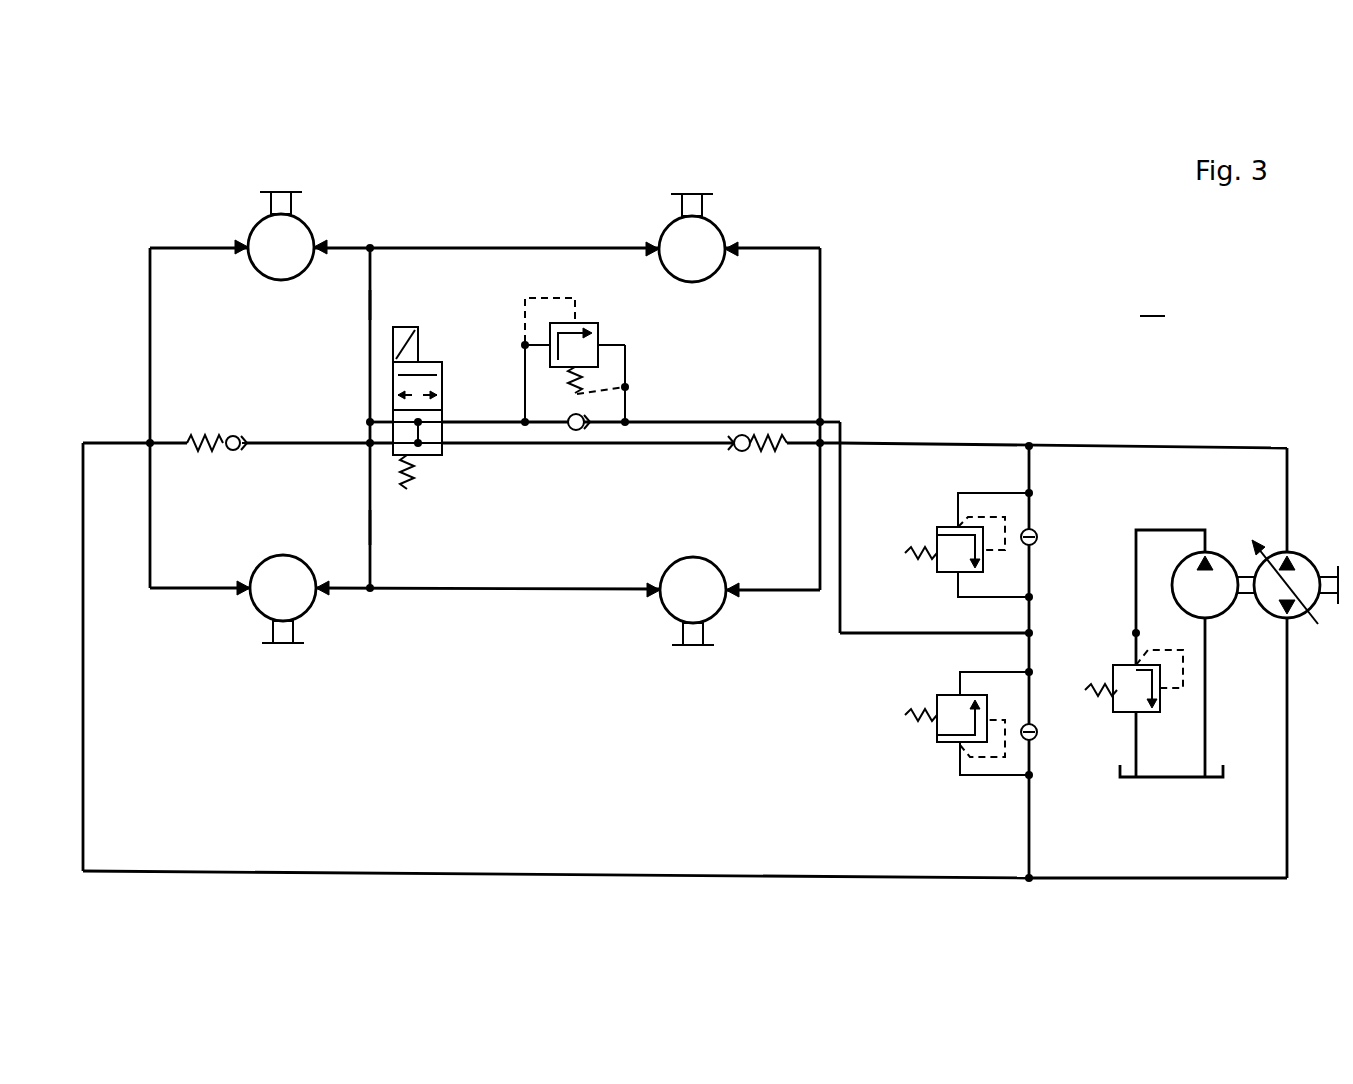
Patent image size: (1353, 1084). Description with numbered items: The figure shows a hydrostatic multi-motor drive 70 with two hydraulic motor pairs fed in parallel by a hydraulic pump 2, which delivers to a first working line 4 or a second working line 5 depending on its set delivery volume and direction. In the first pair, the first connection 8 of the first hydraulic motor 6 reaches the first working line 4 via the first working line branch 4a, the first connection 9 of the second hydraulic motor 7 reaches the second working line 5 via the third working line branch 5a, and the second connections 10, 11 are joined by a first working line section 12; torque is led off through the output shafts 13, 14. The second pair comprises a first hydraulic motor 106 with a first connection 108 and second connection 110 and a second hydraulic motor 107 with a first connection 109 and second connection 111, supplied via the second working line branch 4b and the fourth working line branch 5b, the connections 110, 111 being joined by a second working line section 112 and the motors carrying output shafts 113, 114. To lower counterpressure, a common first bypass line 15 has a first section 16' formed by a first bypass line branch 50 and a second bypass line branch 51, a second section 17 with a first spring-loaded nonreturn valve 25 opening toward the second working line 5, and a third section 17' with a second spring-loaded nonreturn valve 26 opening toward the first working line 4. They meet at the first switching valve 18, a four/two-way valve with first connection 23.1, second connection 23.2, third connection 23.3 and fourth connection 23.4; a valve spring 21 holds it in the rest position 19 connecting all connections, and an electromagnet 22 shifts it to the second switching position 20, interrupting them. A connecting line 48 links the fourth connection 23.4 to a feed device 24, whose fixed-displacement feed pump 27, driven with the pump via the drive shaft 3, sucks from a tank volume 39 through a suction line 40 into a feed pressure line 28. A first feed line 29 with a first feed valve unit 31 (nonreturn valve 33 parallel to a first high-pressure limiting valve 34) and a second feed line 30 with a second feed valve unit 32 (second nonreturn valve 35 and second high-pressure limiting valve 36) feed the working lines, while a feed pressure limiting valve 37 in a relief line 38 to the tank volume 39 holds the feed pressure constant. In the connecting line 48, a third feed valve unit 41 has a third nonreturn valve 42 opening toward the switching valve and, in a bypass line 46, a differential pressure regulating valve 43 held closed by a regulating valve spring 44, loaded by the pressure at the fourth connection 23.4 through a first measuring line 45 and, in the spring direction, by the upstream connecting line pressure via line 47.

The hydraulic pump 2 is at (1296, 566).
The drive shaft 3 is at (1339, 598).
The first working line 4 is at (973, 447).
The first working line branch 4a is at (806, 593).
The second working line branch 4b is at (806, 246).
The second working line 5 is at (690, 875).
The third working line branch 5a is at (149, 523).
The fourth working line branch 5b is at (149, 333).
The first hydraulic motor 6 is at (688, 626).
The second hydraulic motor 7 is at (287, 625).
The first connection 8 is at (726, 592).
The first connection 9 is at (250, 590).
The second connection 10 is at (660, 592).
The second connection 11 is at (316, 590).
The first working line section 12 is at (478, 590).
The output shaft 13 is at (695, 647).
The output shaft 14 is at (286, 645).
The first bypass line 15 is at (305, 392).
The first section 16' is at (490, 389).
The second section 17 is at (135, 623).
The third section 17' is at (597, 463).
The first switching valve 18 is at (440, 283).
The rest position 19 is at (430, 438).
The second switching position 20 is at (393, 383).
The valve spring 21 is at (407, 492).
The electromagnet 22 is at (414, 328).
The first connection 23.1 is at (369, 421).
The second connection 23.2 is at (370, 444).
The third connection 23.3 is at (446, 446).
The fourth connection 23.4 is at (446, 418).
The feed device 24 is at (1200, 485).
The first spring-loaded nonreturn valve 25 is at (231, 451).
The second spring-loaded nonreturn valve 26 is at (745, 435).
The feed pump 27 is at (1215, 602).
The feed pressure line 28 is at (1171, 529).
The first feed line 29 is at (1031, 470).
The second feed line 30 is at (1031, 826).
The first feed valve unit 31 is at (925, 570).
The second feed valve unit 32 is at (937, 760).
The nonreturn valve 33 is at (1038, 535).
The first high-pressure limiting valve 34 is at (936, 535).
The second nonreturn valve 35 is at (1038, 733).
The second high-pressure limiting valve 36 is at (937, 735).
The feed pressure limiting valve 37 is at (1113, 700).
The relief line 38 is at (1138, 748).
The tank volume 39 is at (1215, 780).
The suction line 40 is at (1208, 715).
The third feed valve unit 41 is at (582, 281).
The third nonreturn valve 42 is at (577, 432).
The differential pressure regulating valve 43 is at (590, 338).
The regulating valve spring 44 is at (525, 386).
The first measuring line 45 is at (577, 301).
The bypass line 46 is at (628, 356).
The control line 47 is at (628, 386).
The connecting line 48 is at (840, 420).
The first bypass line branch 50 is at (370, 527).
The second bypass line branch 51 is at (370, 303).
The hydraulic system 70 is at (1152, 302).
The first hydraulic motor 106 is at (691, 210).
The second hydraulic motor 107 is at (282, 209).
The first connection 108 is at (724, 247).
The first connection 109 is at (250, 243).
The second connection 110 is at (660, 245).
The second connection 111 is at (314, 246).
The second working line section 112 is at (402, 247).
The output shaft 113 is at (692, 192).
The output shaft 114 is at (284, 190).